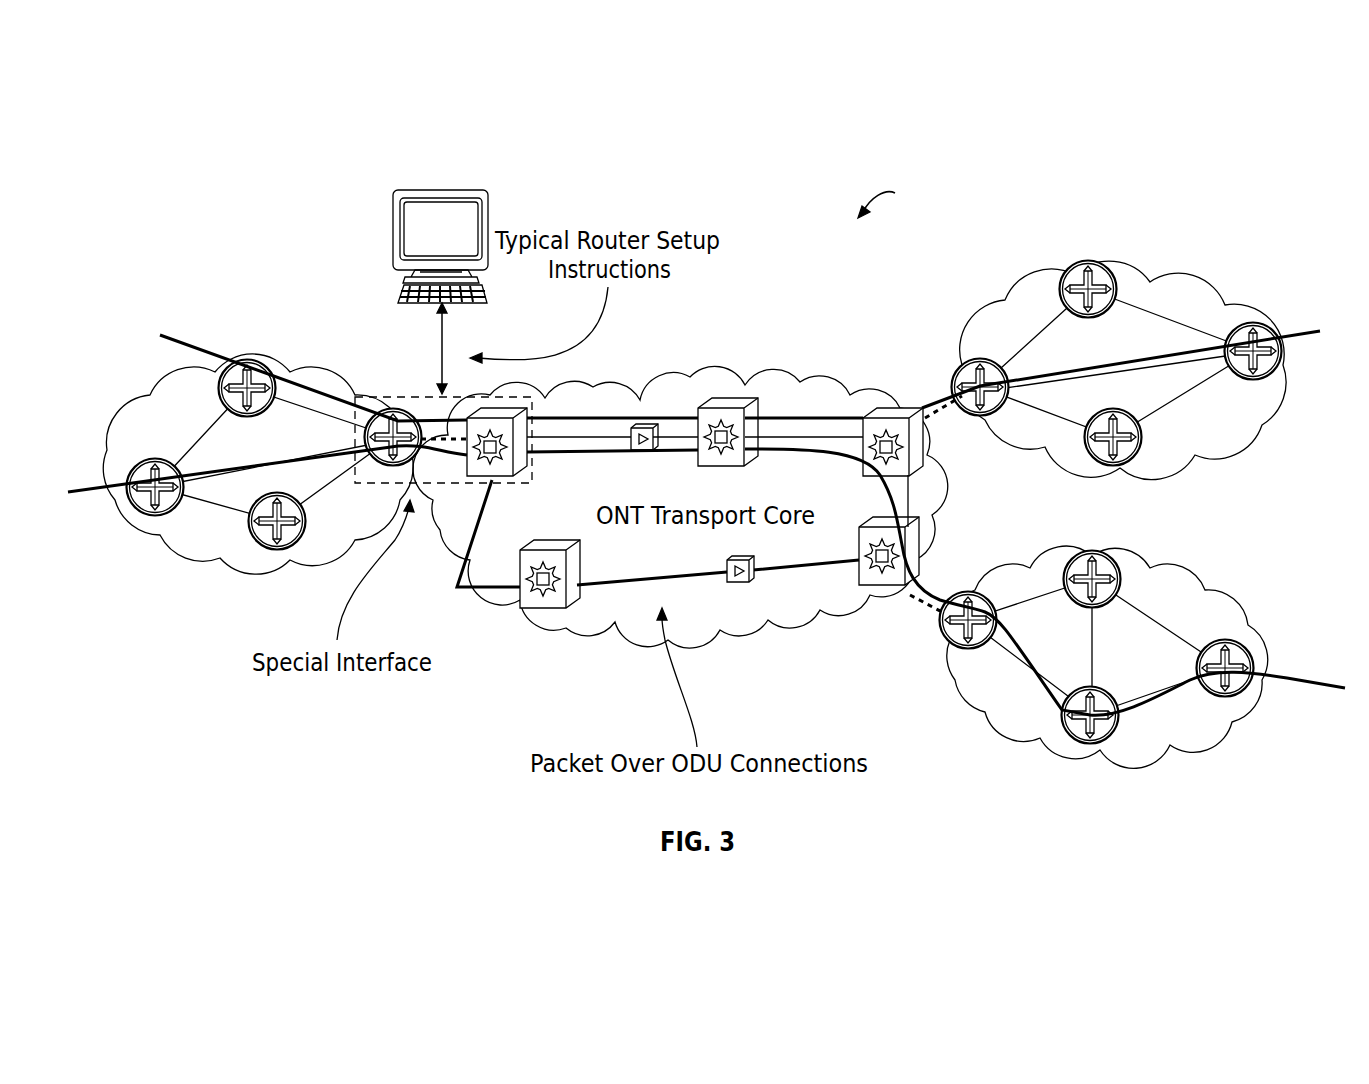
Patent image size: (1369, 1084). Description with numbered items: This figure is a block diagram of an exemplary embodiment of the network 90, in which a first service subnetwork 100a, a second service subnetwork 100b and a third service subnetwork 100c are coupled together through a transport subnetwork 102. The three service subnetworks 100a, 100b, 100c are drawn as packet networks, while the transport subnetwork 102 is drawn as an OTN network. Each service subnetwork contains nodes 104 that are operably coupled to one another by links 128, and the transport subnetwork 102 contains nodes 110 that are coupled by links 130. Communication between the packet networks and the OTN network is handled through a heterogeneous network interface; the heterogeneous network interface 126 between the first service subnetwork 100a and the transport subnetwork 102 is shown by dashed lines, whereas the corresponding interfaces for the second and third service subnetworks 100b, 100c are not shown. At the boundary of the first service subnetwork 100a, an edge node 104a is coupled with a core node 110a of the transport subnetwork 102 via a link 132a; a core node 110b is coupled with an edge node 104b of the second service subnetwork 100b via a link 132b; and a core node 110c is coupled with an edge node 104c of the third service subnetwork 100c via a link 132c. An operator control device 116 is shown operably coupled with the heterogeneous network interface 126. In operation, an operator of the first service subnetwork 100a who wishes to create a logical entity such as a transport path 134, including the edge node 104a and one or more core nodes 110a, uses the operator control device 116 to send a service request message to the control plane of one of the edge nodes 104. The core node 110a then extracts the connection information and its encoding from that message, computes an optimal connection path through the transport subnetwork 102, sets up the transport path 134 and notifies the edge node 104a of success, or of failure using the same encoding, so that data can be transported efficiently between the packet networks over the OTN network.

The network 90 is at (891, 199).
The first service subnetwork 100a is at (277, 364).
The second service subnetwork 100b is at (1133, 271).
The third service subnetwork 100c is at (1227, 596).
The transport subnetwork 102 is at (788, 388).
The nodes 104 is at (280, 555).
The edge node 104a is at (244, 358).
The edge node 104b is at (967, 357).
The edge node 104c is at (946, 640).
The nodes 110 is at (720, 396).
The core node 110a is at (512, 482).
The core node 110b is at (900, 411).
The core node 110c is at (913, 557).
The operator control device 116 is at (443, 191).
The heterogeneous network interface 126 is at (536, 432).
The links 128 is at (318, 396).
The links 130 is at (830, 566).
The link 132a is at (450, 437).
The link 132b is at (935, 424).
The link 132c is at (927, 607).
The packet transport path 134 is at (641, 412).